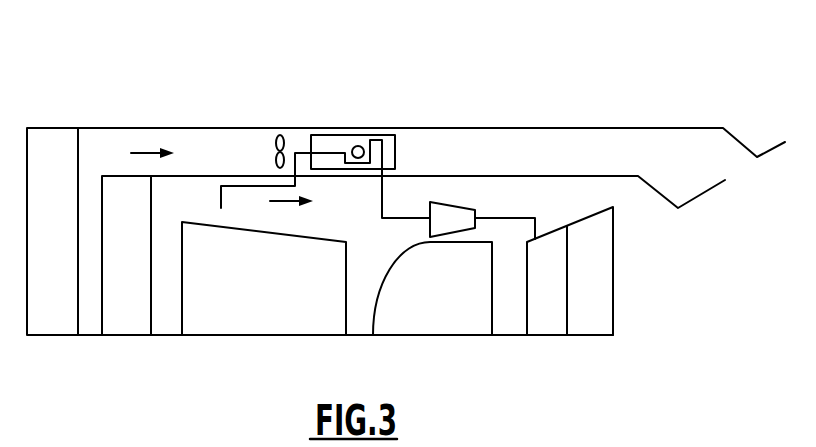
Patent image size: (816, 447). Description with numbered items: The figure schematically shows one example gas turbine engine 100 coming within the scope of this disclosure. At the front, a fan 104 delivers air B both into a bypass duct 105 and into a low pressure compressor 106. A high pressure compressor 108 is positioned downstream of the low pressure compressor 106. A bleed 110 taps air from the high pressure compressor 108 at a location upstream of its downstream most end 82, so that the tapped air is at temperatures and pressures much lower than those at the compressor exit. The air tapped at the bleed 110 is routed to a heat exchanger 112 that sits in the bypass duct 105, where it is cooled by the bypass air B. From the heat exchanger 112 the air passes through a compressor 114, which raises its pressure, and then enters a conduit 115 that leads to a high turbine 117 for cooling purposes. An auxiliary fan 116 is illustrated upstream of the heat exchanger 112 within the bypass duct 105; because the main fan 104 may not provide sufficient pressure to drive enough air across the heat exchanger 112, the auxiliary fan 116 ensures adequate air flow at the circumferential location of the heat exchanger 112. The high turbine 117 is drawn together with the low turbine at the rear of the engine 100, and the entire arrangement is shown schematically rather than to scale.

The engine 100 is at (328, 58).
The fan 104 is at (58, 150).
The bypass duct 105 is at (198, 150).
The low pressure compressor 106 is at (127, 320).
The high pressure compressor 108 is at (222, 322).
The bleed 110 is at (221, 208).
The heat exchanger 112 is at (355, 135).
The compressor 114 is at (443, 203).
The conduit 115 is at (515, 218).
The auxiliary fan 116 is at (280, 135).
The high turbine 117 is at (548, 323).
The downstream most end 82 is at (345, 242).